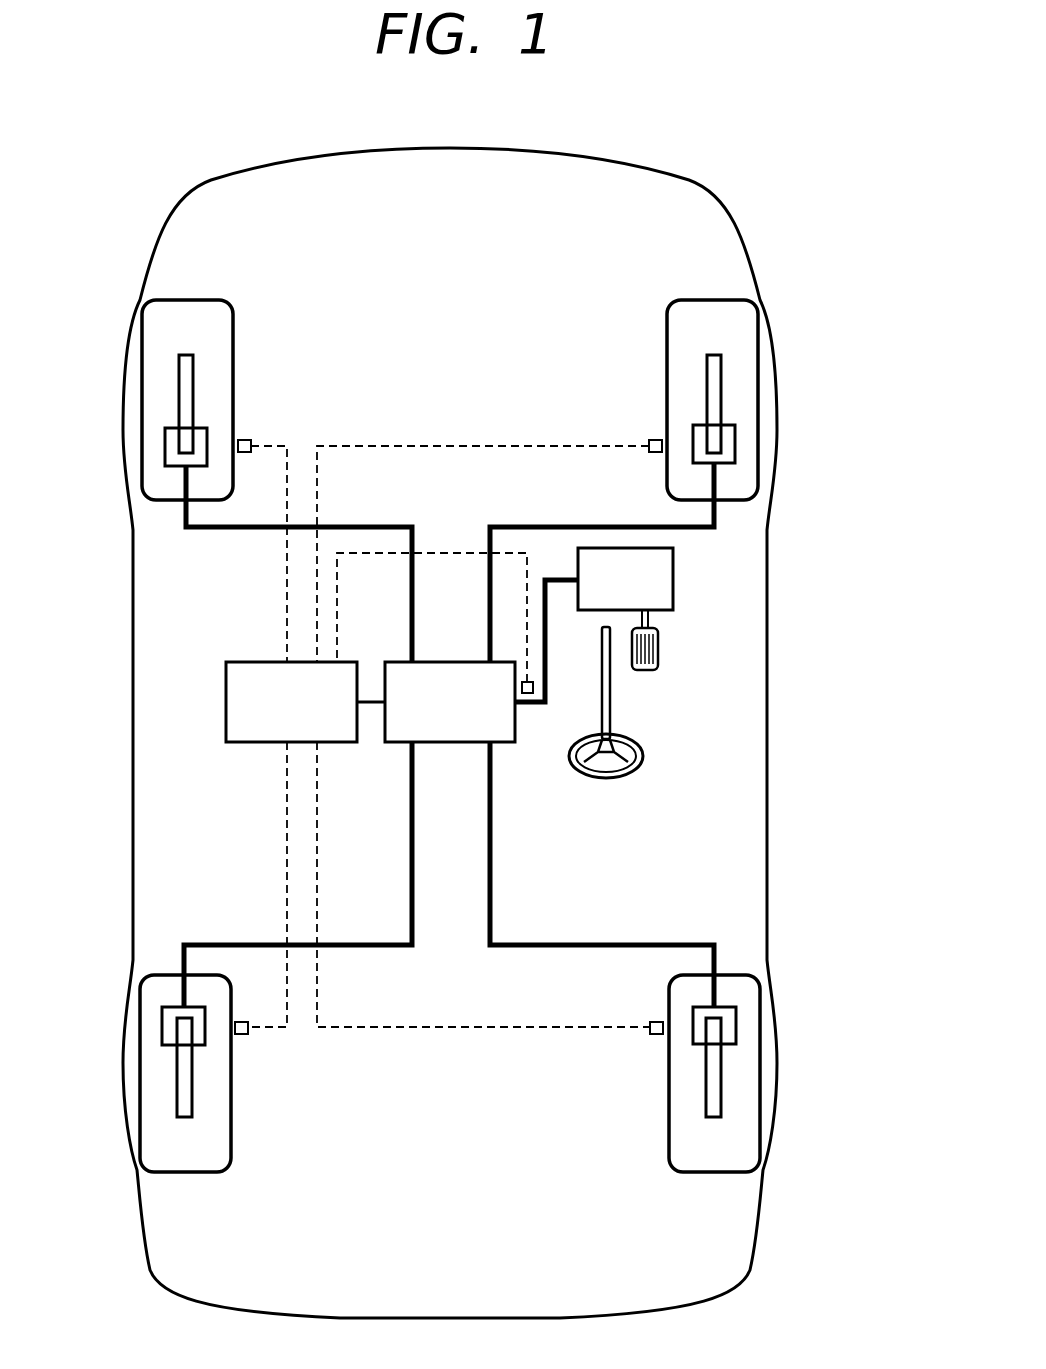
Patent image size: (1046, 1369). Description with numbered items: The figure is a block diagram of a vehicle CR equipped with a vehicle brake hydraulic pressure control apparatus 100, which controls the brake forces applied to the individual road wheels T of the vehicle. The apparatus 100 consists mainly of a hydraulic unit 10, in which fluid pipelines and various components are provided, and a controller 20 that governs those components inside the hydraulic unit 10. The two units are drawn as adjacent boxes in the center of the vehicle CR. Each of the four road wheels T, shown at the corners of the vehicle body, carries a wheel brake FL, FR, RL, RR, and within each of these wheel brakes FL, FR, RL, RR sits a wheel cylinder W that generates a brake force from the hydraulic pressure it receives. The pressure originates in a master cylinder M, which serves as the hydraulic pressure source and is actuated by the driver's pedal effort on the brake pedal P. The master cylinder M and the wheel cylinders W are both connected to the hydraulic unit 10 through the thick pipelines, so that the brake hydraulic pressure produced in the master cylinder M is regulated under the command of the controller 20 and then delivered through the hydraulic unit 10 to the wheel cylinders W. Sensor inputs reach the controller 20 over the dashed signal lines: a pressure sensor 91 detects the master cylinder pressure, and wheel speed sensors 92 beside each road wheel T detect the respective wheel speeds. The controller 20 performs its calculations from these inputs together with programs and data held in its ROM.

The vehicle CR is at (608, 158).
The road wheel T is at (142, 354).
The wheel brake FL is at (179, 393).
The wheel brake FR is at (721, 385).
The wheel brake RL is at (177, 1080).
The wheel brake RR is at (721, 1080).
The wheel cylinder W is at (165, 446).
The wheel speed sensor 92 is at (245, 440).
The vehicle brake hydraulic pressure control apparatus 100 is at (205, 658).
The controller 20 is at (255, 742).
The hydraulic unit 10 is at (515, 722).
The pressure sensor 91 is at (533, 687).
The master cylinder M is at (673, 580).
The brake pedal P is at (658, 650).